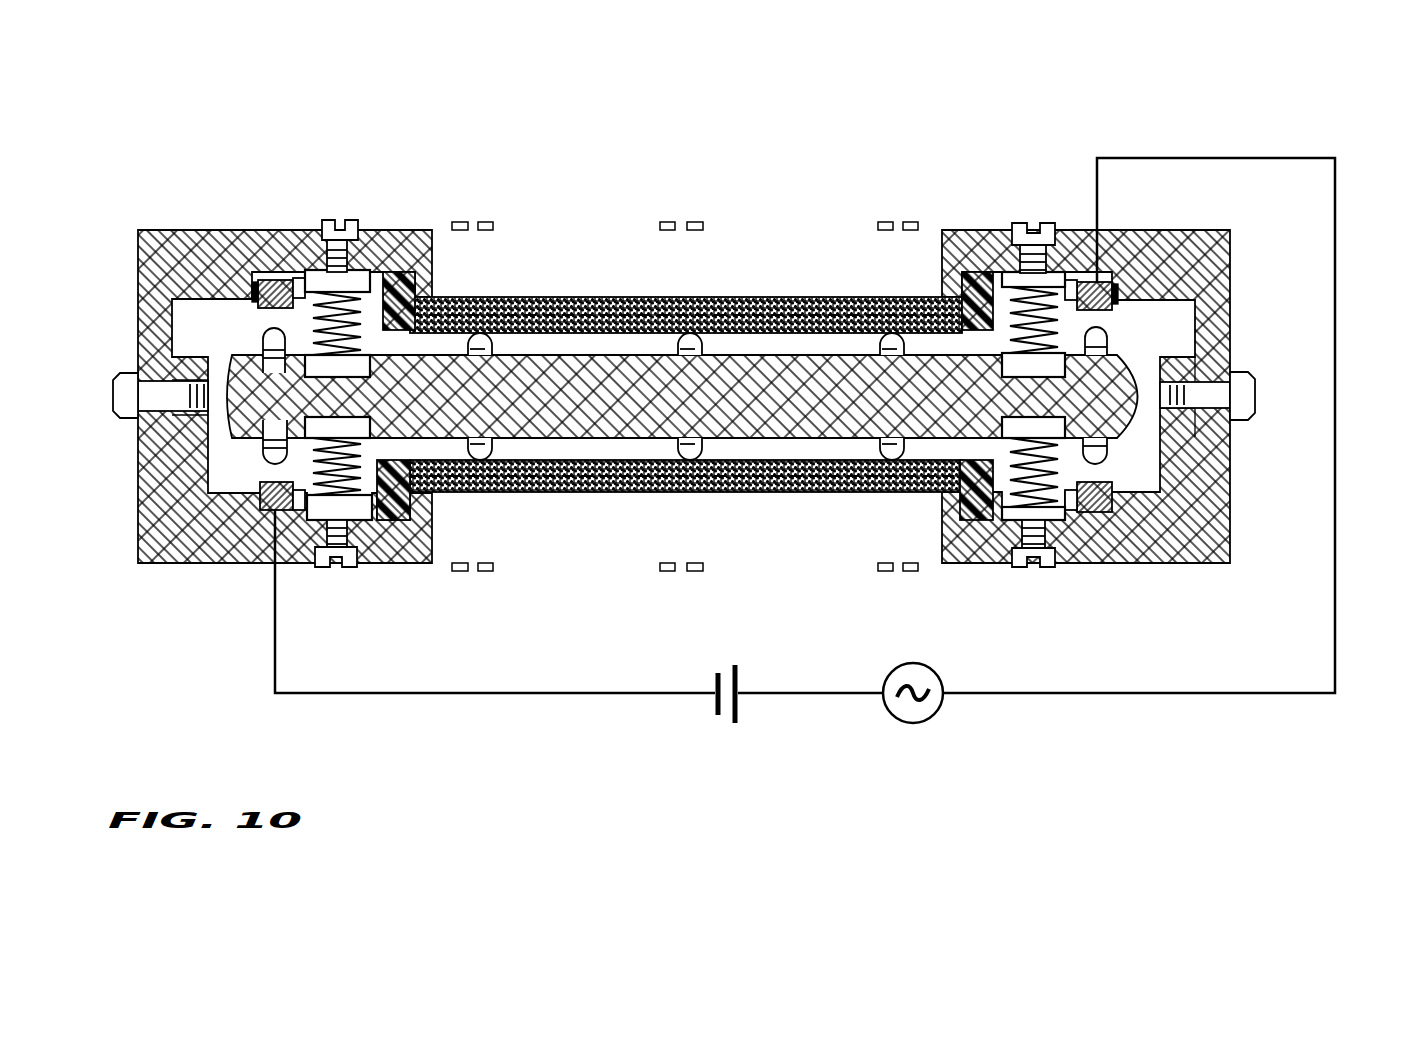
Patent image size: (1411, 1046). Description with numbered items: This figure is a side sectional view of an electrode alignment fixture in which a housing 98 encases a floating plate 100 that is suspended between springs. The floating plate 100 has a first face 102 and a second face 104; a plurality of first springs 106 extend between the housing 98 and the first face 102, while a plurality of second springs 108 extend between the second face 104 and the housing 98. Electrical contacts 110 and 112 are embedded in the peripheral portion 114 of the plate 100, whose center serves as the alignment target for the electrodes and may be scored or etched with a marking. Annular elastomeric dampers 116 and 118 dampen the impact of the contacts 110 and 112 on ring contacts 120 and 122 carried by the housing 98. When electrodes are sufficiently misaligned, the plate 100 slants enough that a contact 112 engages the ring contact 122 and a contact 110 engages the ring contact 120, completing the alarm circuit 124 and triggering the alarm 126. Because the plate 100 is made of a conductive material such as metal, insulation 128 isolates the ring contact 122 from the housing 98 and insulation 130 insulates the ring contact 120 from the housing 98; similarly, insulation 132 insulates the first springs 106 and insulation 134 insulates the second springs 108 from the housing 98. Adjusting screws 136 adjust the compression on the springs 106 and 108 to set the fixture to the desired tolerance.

The housing 98 is at (1228, 300).
The floating plate 100 is at (850, 415).
The first face 102 is at (915, 355).
The second face 104 is at (430, 440).
The first springs 106 is at (390, 272).
The second springs 108 is at (405, 515).
The electrical contacts 110 is at (262, 342).
The electrical contacts 112 is at (478, 455).
The peripheral portion 114 is at (1120, 390).
The annular elastomeric damper 116 is at (472, 297).
The annular elastomeric damper 118 is at (690, 480).
The ring contact 120 is at (262, 282).
The ring contact 122 is at (268, 510).
The alarm circuit 124 is at (1336, 340).
The alarm 126 is at (928, 672).
The insulation 128 is at (296, 512).
The insulation 130 is at (257, 292).
The insulation 132 is at (300, 280).
The insulation 134 is at (378, 520).
The adjusting screws 136 is at (332, 222).